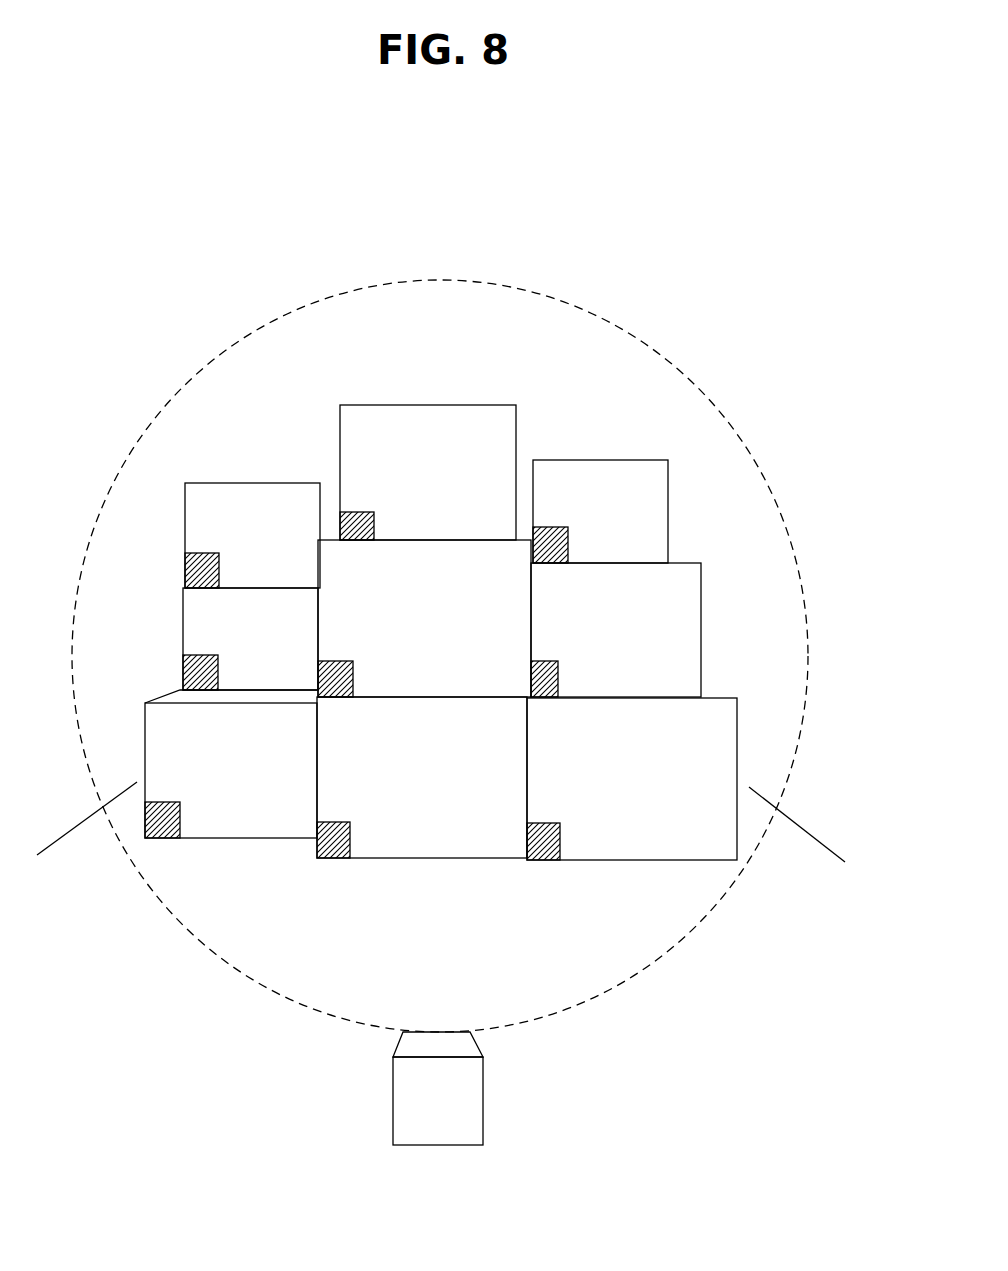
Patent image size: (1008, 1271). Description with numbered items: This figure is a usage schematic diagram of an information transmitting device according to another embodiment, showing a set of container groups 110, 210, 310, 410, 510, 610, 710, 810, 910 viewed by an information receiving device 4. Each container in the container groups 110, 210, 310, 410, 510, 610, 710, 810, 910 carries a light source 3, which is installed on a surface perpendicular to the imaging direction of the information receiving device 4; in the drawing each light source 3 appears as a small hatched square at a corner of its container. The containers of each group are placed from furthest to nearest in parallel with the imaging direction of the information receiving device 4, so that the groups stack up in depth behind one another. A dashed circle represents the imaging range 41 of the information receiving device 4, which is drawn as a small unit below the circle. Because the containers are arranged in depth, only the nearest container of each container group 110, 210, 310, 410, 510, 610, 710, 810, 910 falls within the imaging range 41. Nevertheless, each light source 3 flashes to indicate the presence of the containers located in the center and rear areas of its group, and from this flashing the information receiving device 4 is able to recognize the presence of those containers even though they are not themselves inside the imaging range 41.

The light source 3 is at (358, 512).
The information receiving device 4 is at (483, 1125).
The imaging range 41 is at (605, 318).
The container group 110 is at (247, 838).
The container group 210 is at (448, 858).
The container group 310 is at (737, 698).
The container group 410 is at (182, 623).
The container group 510 is at (500, 540).
The container group 610 is at (684, 563).
The container group 710 is at (207, 483).
The container group 810 is at (405, 405).
The container group 910 is at (638, 460).